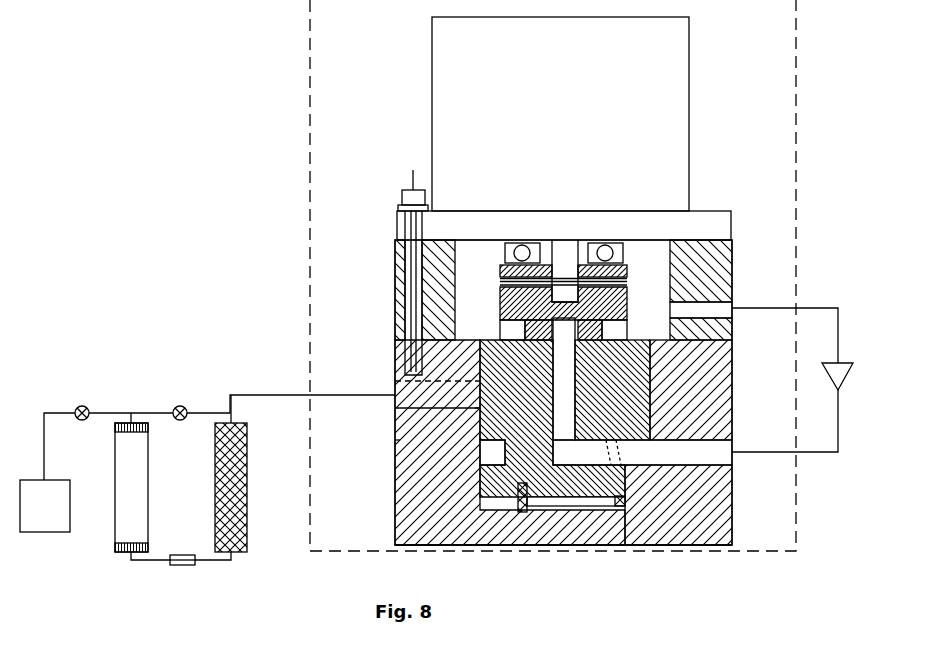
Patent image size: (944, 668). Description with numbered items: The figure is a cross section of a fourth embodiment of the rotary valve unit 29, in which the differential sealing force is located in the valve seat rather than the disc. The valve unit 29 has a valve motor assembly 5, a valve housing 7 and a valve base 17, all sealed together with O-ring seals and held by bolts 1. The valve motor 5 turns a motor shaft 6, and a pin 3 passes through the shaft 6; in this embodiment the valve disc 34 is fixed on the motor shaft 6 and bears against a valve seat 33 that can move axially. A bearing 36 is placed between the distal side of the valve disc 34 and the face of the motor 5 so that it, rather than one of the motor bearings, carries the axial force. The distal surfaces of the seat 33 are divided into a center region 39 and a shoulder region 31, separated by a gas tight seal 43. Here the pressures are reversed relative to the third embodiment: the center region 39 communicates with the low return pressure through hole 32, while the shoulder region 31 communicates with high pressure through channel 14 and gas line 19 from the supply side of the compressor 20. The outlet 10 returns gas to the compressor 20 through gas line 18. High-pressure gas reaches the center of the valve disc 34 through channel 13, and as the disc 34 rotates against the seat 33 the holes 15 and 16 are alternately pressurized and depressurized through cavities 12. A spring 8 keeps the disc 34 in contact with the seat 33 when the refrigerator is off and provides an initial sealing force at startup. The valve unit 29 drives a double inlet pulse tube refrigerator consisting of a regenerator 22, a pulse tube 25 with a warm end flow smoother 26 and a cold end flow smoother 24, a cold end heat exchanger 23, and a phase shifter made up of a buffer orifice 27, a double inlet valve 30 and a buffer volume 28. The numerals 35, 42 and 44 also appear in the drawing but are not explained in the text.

The bolts 1 is at (410, 198).
The pin 3 is at (497, 280).
The valve motor assembly 5 is at (668, 40).
The motor shaft 6 is at (628, 282).
The valve housing 7 is at (725, 286).
The spring 8 is at (513, 502).
The outlet 10 is at (722, 313).
The cavities 12 is at (510, 328).
The channel 13 is at (562, 349).
The inlet 14 is at (690, 455).
The hole 15 is at (482, 373).
The hole 16 is at (480, 405).
The valve base 17 is at (700, 487).
The gas line 18 is at (785, 328).
The gas line 19 is at (785, 421).
The compressor 20 is at (847, 378).
The regenerator 22 is at (235, 477).
The cold end heat exchanger 23 is at (181, 572).
The cold end flow smoother 24 is at (118, 546).
The pulse tube 25 is at (128, 486).
The warm end flow smoother 26 is at (118, 429).
The buffer orifice 27 is at (70, 423).
The buffer volume 28 is at (47, 472).
The valve unit 29 is at (812, 108).
The double inlet valve 30 is at (282, 419).
The shoulder region 31 is at (500, 452).
The hole 32 is at (628, 398).
The valve seat 33 is at (515, 458).
The valve disc 34 is at (510, 300).
The pin 35 is at (522, 512).
The bearing 36 is at (607, 252).
The center region 39 is at (557, 507).
The seal 42 is at (470, 383).
The gas tight seal 43 is at (620, 480).
The seal 44 is at (480, 413).